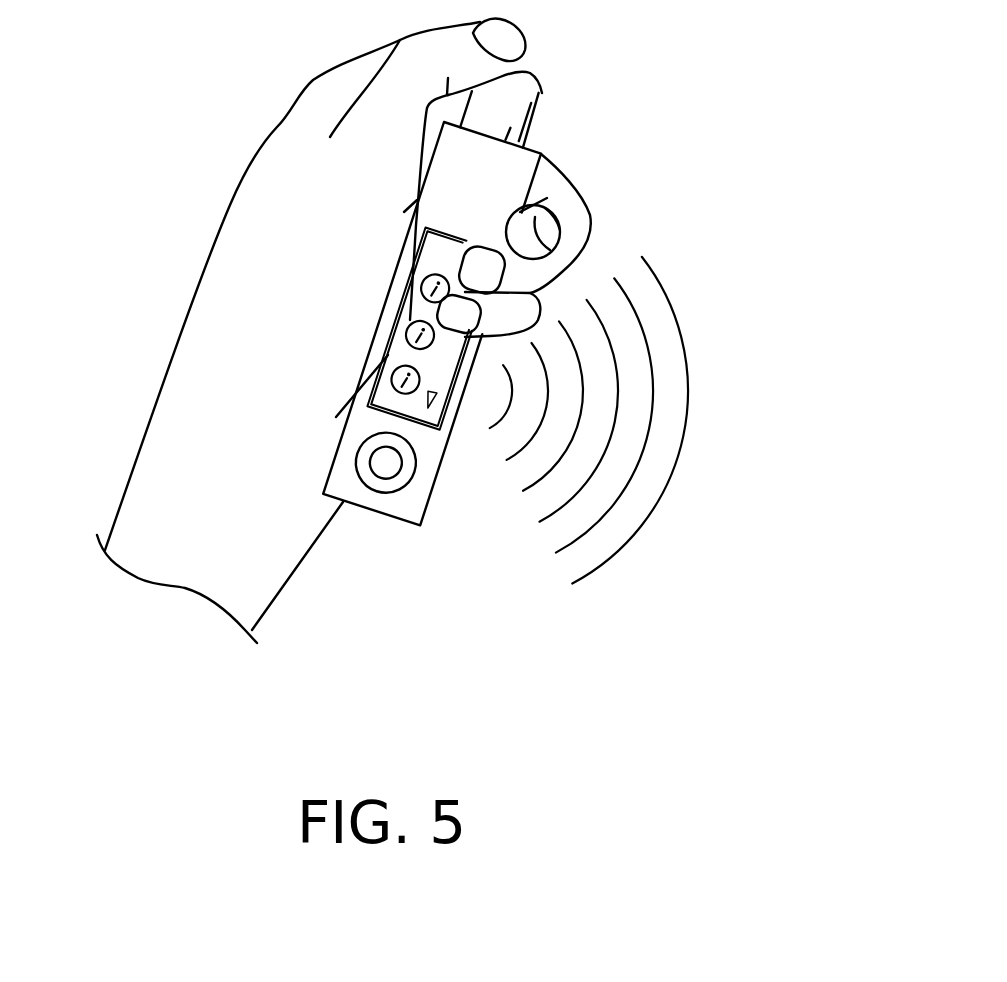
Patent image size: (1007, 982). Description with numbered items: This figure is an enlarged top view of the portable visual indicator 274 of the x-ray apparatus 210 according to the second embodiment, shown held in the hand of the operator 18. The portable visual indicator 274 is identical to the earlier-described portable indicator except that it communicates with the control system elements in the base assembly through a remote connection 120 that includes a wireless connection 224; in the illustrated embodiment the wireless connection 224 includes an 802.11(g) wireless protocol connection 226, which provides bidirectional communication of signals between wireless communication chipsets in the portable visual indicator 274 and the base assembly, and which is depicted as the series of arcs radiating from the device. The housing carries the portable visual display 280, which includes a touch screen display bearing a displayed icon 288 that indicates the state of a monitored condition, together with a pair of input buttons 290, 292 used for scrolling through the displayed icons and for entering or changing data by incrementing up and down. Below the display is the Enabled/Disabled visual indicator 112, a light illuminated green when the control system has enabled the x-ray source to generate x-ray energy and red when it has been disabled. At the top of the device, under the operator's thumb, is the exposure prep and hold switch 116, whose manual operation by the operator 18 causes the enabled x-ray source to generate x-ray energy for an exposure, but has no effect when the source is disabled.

The operator 18 is at (160, 437).
The Enabled/Disabled visual indicator 112 is at (376, 487).
The exposure prep and hold switch 116 is at (542, 93).
The remote connection 120 is at (695, 420).
The wireless connection 224 is at (695, 420).
The 802.11(g) wireless protocol connection 226 is at (693, 497).
The x-ray apparatus 210 is at (407, 714).
The portable visual indicator 274 is at (360, 518).
The portable visual display 280 is at (411, 318).
The displayed icon 288 is at (407, 332).
The input button 290 is at (440, 215).
The input button 292 is at (392, 379).